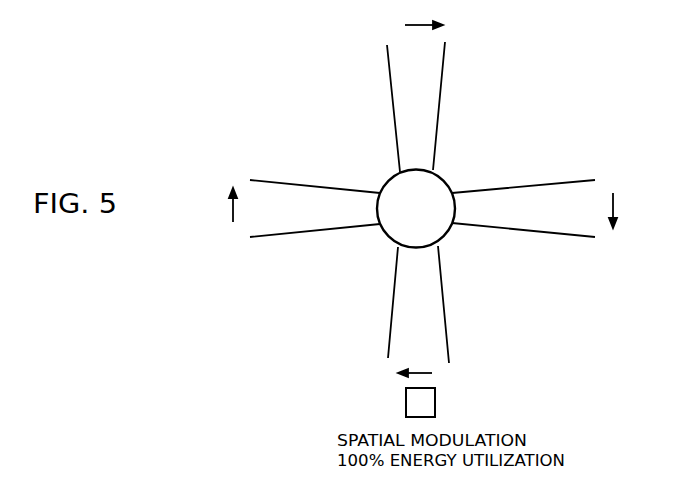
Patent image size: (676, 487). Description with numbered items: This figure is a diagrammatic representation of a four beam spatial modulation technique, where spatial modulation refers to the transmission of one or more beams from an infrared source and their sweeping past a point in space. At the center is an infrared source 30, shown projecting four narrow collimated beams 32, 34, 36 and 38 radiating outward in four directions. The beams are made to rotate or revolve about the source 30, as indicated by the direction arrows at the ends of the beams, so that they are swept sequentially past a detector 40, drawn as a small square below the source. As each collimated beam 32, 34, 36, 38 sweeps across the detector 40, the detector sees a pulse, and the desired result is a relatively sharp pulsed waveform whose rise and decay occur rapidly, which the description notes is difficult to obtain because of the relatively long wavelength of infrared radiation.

The infrared source 30 is at (443, 178).
The collimated beam 32 is at (530, 183).
The collimated beam 34 is at (450, 310).
The collimated beam 36 is at (307, 183).
The collimated beam 38 is at (443, 82).
The detector 40 is at (435, 396).